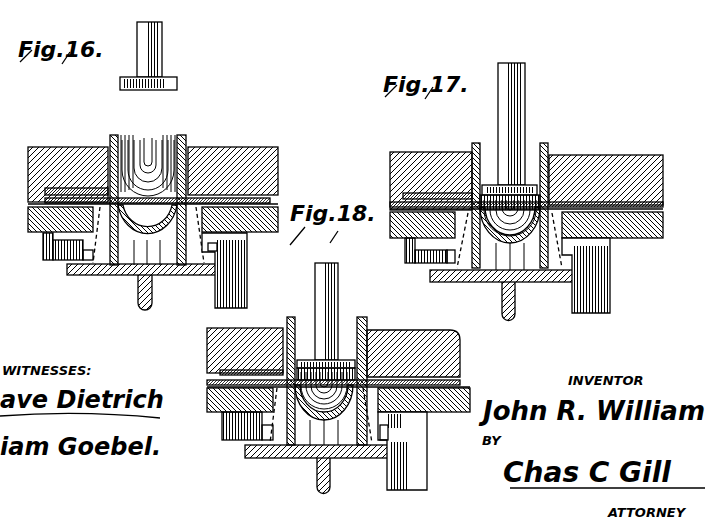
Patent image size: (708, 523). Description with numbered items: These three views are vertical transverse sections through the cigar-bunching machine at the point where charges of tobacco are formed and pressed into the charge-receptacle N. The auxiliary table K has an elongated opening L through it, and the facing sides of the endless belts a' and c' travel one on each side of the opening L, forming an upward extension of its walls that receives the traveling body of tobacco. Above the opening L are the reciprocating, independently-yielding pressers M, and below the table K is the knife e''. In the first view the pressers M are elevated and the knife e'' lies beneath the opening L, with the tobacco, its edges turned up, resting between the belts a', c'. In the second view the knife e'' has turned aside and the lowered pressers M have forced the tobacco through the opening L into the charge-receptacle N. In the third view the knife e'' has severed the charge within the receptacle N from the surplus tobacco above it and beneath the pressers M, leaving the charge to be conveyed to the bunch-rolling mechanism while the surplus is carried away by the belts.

In FIG. 16, the pressers M is at (150, 56).
In FIG. 17, the pressers M is at (513, 129).
In FIG. 18, the pressers M is at (326, 315).
In FIG. 16, the auxiliary table K is at (153, 168).
In FIG. 17, the auxiliary table K is at (526, 174).
In FIG. 18, the auxiliary table K is at (340, 352).
In FIG. 16, the elongated opening L is at (193, 147).
In FIG. 17, the elongated opening L is at (471, 152).
In FIG. 18, the elongated opening L is at (367, 328).
In FIG. 16, the belt c' is at (115, 190).
In FIG. 17, the belt c' is at (478, 196).
In FIG. 18, the belt c' is at (293, 372).
In FIG. 16, the endless belt a' is at (187, 189).
In FIG. 17, the endless belt a' is at (550, 197).
In FIG. 18, the endless belt a' is at (364, 372).
In FIG. 16, the knife e'' is at (173, 190).
In FIG. 18, the knife e'' is at (348, 375).
In FIG. 16, the charge-receptacle N is at (147, 287).
In FIG. 17, the charge-receptacle N is at (510, 295).
In FIG. 18, the charge-receptacle N is at (324, 469).